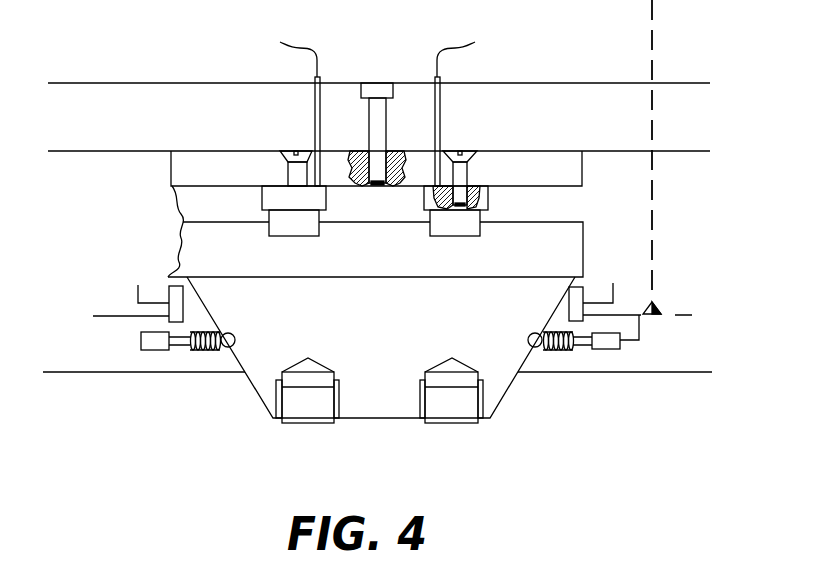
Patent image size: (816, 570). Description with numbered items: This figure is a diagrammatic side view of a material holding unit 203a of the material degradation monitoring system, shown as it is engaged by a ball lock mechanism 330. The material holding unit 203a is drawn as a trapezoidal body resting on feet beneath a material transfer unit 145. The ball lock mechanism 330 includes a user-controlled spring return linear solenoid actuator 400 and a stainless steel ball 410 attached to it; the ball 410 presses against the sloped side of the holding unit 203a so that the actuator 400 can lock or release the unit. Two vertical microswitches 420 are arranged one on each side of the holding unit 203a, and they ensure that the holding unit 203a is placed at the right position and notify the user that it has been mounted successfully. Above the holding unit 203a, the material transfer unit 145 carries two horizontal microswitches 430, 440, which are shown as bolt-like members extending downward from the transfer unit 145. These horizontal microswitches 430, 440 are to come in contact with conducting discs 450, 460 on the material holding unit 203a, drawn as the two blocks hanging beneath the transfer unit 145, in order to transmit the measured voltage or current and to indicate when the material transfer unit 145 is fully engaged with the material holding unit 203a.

The material transfer unit 145 is at (493, 162).
The material holding unit 203a is at (427, 326).
The ball lock mechanism 330 is at (623, 348).
The spring return linear solenoid actuator 400 is at (141, 342).
The stainless steel ball 410 is at (228, 348).
The vertical microswitch 420 is at (168, 290).
The horizontal microswitch 430 is at (490, 196).
The horizontal microswitch 440 is at (273, 185).
The conducting disc 450 is at (297, 237).
The conducting disc 460 is at (463, 237).